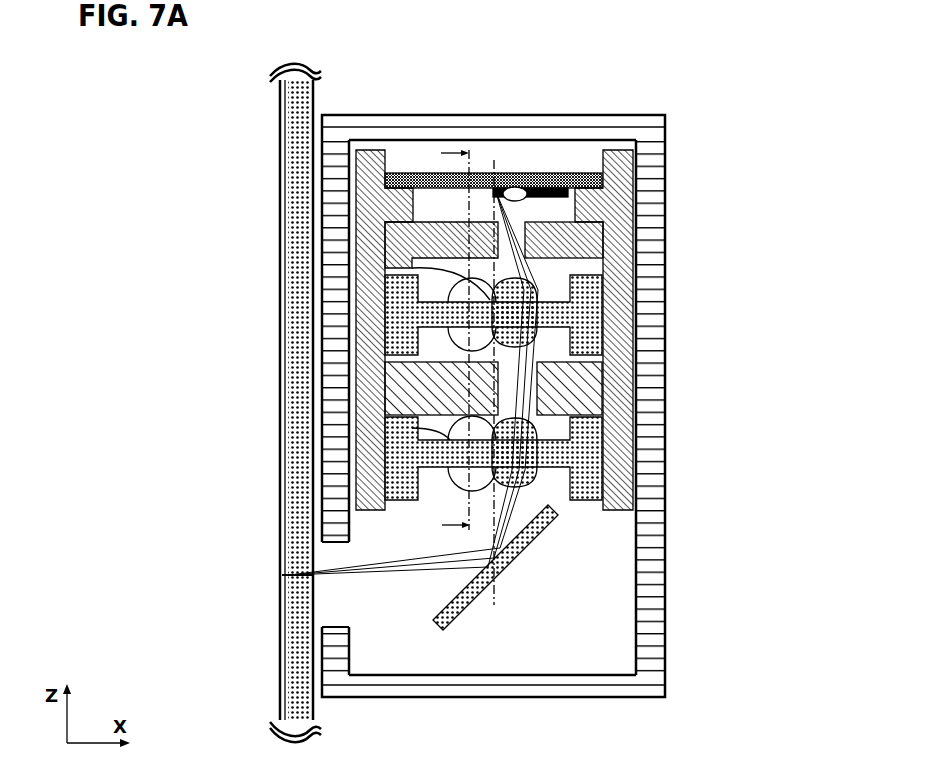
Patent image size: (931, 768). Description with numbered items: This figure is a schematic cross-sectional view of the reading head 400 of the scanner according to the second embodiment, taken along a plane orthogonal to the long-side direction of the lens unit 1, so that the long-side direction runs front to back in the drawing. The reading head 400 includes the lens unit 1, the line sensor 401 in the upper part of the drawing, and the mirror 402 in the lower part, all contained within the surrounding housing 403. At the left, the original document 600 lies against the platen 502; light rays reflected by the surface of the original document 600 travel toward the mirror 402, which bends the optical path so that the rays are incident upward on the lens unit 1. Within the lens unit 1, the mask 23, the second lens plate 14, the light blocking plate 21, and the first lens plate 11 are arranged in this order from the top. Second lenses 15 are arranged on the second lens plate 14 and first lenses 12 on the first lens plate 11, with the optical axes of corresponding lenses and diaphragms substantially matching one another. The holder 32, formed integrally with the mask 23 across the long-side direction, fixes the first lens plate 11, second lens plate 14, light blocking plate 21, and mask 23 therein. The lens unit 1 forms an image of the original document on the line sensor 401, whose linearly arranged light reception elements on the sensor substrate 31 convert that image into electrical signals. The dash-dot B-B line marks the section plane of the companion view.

The lens unit 1 is at (541, 295).
The first lens plate 11 is at (387, 458).
The first lenses 12 is at (412, 428).
The second lens plate 14 is at (387, 309).
The second lenses 15 is at (412, 268).
The light blocking plate 21 is at (585, 398).
The mask 23 is at (553, 243).
The sensor substrate 31 is at (568, 173).
The holder 32 is at (623, 353).
The reading head 400 is at (698, 107).
The line sensor 401 is at (497, 190).
The mirror 402 is at (522, 555).
The housing 403 is at (392, 116).
The platen 502 is at (297, 620).
The original document 600 is at (255, 403).